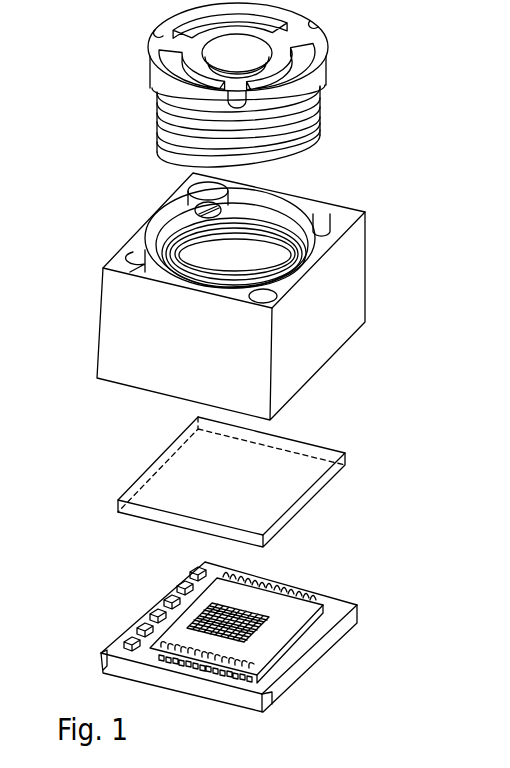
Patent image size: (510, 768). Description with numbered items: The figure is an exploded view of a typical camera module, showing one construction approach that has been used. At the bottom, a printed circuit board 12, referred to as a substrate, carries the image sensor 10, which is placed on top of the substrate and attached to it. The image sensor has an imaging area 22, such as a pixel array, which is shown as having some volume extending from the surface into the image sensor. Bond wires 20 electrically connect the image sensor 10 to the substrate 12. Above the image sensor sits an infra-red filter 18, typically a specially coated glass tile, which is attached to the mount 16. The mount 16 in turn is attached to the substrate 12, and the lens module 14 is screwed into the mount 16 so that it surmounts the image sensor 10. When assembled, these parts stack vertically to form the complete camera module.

The image sensor 10 is at (290, 613).
The printed circuit board 12 is at (290, 660).
The lens module 14 is at (307, 85).
The mount 16 is at (335, 292).
The infra-red filter 18 is at (293, 490).
The bond wires 20 is at (247, 664).
The imaging area 22 is at (193, 623).